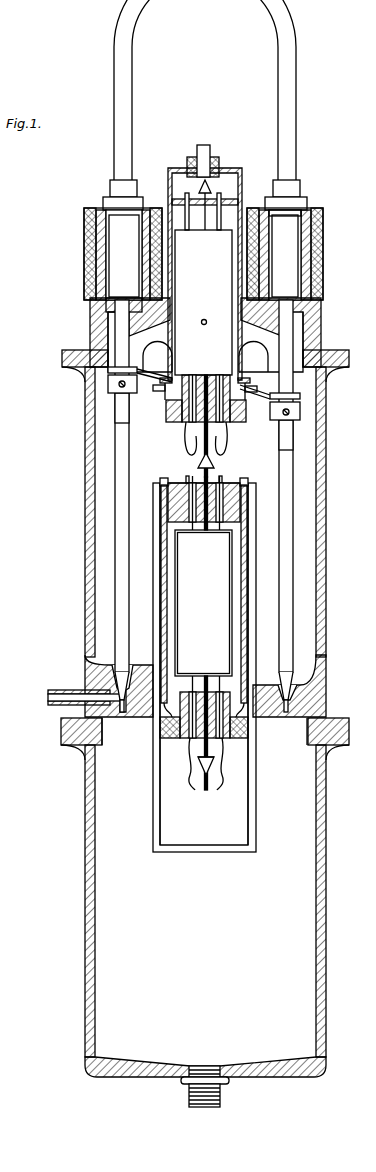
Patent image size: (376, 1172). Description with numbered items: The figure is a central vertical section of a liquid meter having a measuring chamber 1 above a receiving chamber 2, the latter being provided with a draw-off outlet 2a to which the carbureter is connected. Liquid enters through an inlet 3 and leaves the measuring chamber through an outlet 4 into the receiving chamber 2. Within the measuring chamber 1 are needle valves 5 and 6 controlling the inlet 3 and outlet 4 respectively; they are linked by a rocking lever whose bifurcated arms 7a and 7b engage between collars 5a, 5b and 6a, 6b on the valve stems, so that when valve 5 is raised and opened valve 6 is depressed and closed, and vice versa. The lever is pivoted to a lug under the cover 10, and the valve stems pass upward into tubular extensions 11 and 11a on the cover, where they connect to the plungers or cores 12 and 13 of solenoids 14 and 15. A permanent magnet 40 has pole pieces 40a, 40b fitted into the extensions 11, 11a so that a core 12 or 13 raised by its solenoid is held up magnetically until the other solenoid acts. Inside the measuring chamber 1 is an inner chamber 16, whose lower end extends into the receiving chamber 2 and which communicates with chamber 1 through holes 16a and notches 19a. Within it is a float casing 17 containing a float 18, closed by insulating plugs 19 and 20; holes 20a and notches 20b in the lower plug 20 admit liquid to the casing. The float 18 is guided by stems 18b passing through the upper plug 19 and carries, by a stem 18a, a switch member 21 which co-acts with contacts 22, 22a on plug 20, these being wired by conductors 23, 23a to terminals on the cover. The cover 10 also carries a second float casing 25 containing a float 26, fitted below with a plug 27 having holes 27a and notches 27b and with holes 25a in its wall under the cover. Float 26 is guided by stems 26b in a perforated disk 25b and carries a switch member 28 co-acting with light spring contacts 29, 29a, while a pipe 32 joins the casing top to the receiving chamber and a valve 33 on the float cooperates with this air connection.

The measuring chamber 1 is at (325, 548).
The receiving chamber 2 is at (325, 957).
The draw-off outlet 2a is at (221, 1096).
The inlet 3 is at (100, 694).
The outlet 4 is at (288, 712).
The needle valve 5 is at (115, 606).
The collar 5a is at (108, 370).
The collar 5b is at (120, 385).
The needle valve 6 is at (292, 625).
The collar 6a is at (300, 396).
The collar 6b is at (300, 412).
The arm of rocking lever 7a is at (122, 400).
The arm of rocking lever 7b is at (293, 428).
The cover 10 is at (92, 338).
The tubular extension 11 is at (95, 308).
The tubular extension 11a is at (300, 222).
The plunger or core 12 is at (118, 228).
The plunger or core 13 is at (292, 266).
The solenoid 14 is at (86, 258).
The solenoid 15 is at (325, 285).
The inner chamber 16 is at (155, 530).
The holes 16a is at (248, 676).
The float casing 17 is at (165, 635).
The float 18 is at (203, 603).
The stem 18a is at (215, 760).
The stems 18b is at (178, 474).
The upper plug 19 is at (194, 524).
The notches 19a is at (160, 490).
The lower plug 20 is at (214, 690).
The holes 20a is at (200, 745).
The notches 20b is at (160, 725).
The switch member 21 is at (205, 792).
The contact 22 is at (190, 788).
The contact 22a is at (215, 788).
The conductor 23 is at (164, 567).
The conductor 23a is at (245, 585).
The second float casing 25 is at (242, 182).
The holes 25a is at (172, 322).
The perforated disk 25b is at (176, 200).
The float 26 is at (203, 302).
The stems 26b is at (189, 231).
The plug 27 is at (206, 376).
The holes 27a is at (205, 424).
The notches 27b is at (170, 408).
The switch member 28 is at (215, 468).
The light spring contact 29 is at (190, 456).
The light spring contact 29a is at (221, 456).
The pipe 32 is at (205, 145).
The valve 33 is at (210, 183).
The permanent magnet 40 is at (218, 0).
The pole piece 40a is at (107, 203).
The pole piece 40b is at (300, 203).